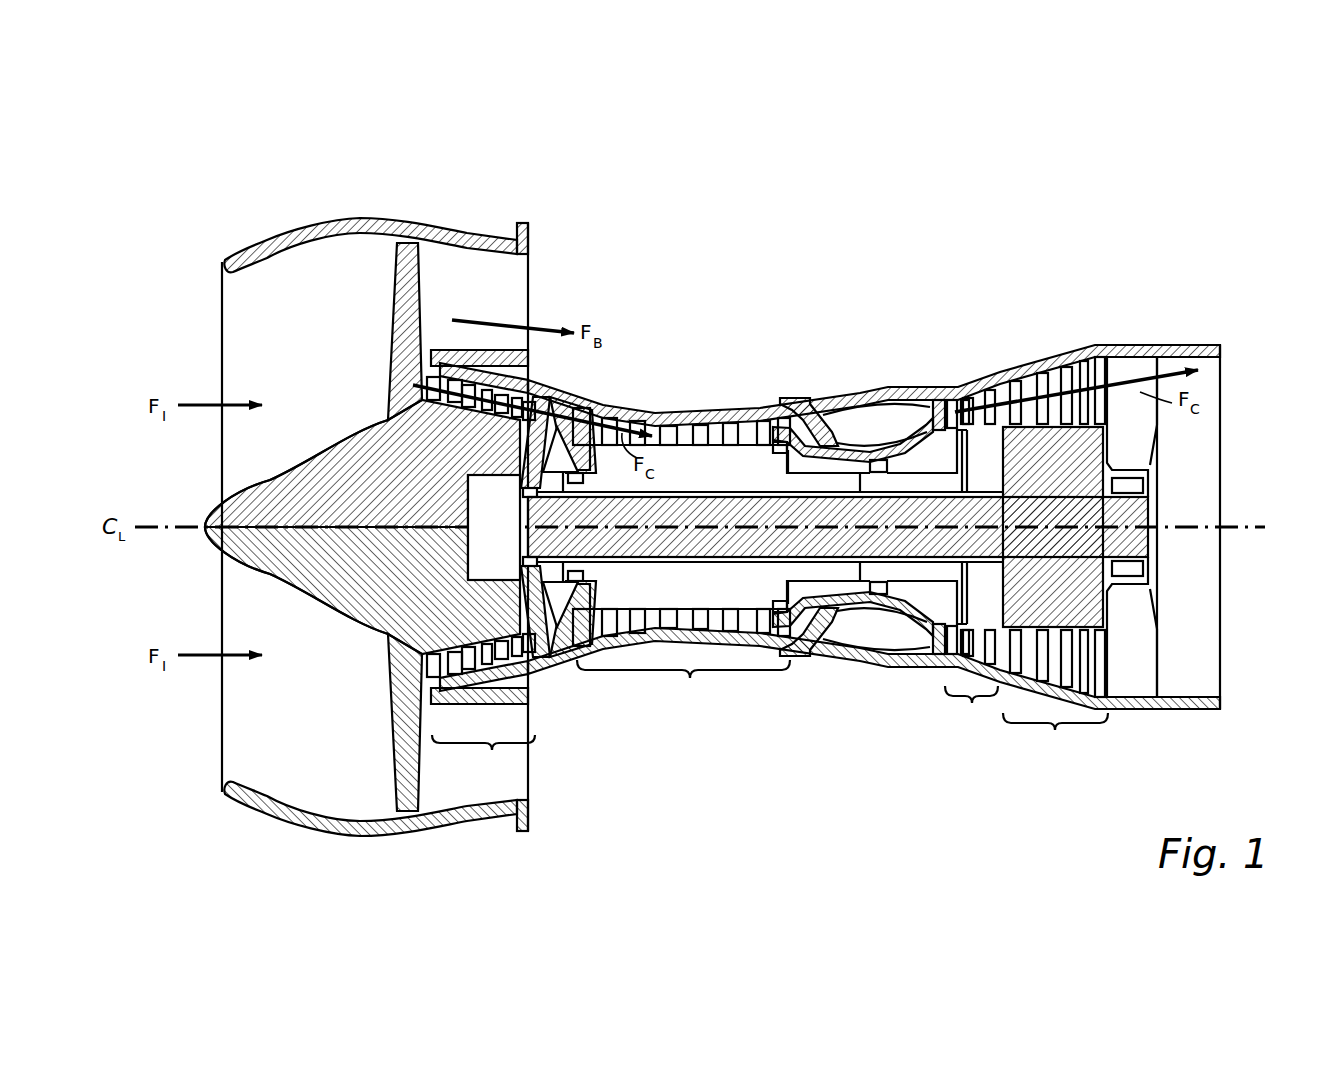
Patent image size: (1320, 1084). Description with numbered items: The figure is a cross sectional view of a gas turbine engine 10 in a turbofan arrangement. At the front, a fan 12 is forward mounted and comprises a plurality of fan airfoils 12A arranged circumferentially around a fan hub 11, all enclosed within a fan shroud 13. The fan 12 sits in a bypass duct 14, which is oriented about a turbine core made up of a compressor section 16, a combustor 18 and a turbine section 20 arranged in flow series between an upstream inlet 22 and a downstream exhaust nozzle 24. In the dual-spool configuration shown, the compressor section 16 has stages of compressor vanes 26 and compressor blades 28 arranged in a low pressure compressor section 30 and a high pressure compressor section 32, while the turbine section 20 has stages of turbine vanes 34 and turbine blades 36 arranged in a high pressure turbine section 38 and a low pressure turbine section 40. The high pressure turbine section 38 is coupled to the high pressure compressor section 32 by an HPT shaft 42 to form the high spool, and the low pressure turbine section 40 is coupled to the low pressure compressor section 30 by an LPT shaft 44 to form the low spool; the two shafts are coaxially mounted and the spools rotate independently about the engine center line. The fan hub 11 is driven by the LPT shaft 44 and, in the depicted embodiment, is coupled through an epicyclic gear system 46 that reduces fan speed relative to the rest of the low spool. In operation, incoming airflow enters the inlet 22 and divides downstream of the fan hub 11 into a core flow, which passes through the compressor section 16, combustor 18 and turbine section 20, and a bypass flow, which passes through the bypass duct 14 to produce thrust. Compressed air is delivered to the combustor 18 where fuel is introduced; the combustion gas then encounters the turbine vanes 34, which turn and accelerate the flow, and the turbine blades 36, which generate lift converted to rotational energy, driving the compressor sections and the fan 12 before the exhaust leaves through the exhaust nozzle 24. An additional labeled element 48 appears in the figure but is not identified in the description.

The gas turbine engine 10 is at (1178, 209).
The fan hub 11 is at (267, 488).
The fan 12 is at (318, 416).
The fan airfoils 12A is at (410, 372).
The fan shroud 13 is at (327, 230).
The bypass duct 14 is at (534, 307).
The compressor section 16 is at (701, 782).
The combustor 18 is at (870, 427).
The turbine section 20 is at (980, 766).
The inlet 22 is at (190, 347).
The exhaust nozzle 24 is at (1205, 464).
The compressor vanes 26 is at (703, 403).
The compressor blades 28 is at (683, 620).
The low pressure compressor section 30 is at (492, 750).
The high pressure compressor section 32 is at (765, 583).
The turbine vanes 34 is at (945, 400).
The turbine blades 36 is at (960, 400).
The high pressure turbine section 38 is at (971, 709).
The low pressure turbine section 40 is at (1035, 561).
The HPT shaft 42 is at (880, 482).
The LPT shaft 44 is at (1140, 540).
The epicyclic gear system 46 is at (503, 537).
The compressor casing 48 is at (655, 405).